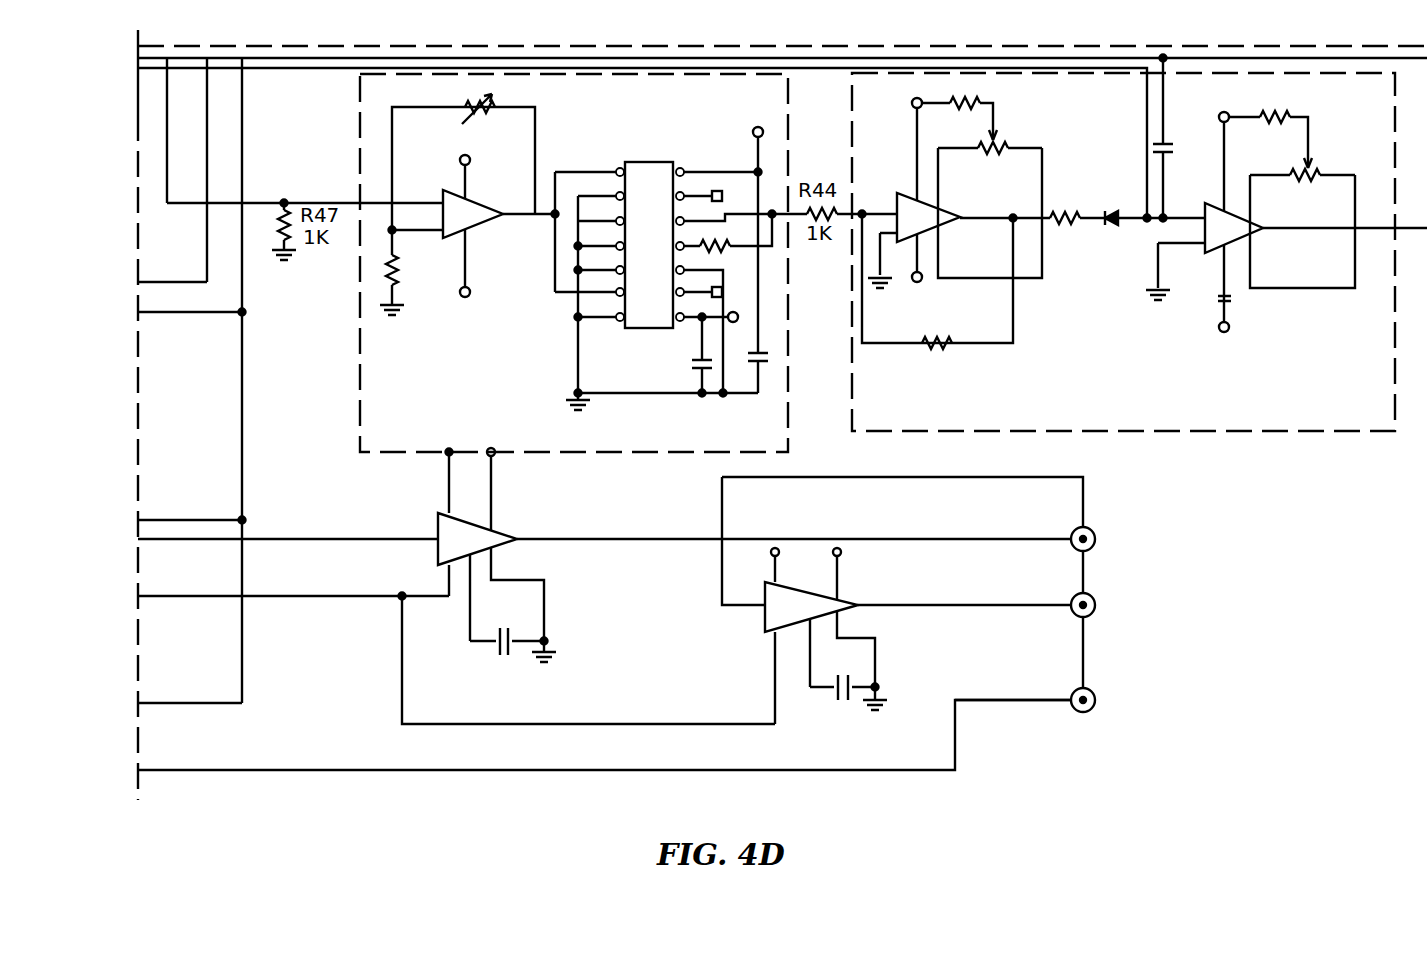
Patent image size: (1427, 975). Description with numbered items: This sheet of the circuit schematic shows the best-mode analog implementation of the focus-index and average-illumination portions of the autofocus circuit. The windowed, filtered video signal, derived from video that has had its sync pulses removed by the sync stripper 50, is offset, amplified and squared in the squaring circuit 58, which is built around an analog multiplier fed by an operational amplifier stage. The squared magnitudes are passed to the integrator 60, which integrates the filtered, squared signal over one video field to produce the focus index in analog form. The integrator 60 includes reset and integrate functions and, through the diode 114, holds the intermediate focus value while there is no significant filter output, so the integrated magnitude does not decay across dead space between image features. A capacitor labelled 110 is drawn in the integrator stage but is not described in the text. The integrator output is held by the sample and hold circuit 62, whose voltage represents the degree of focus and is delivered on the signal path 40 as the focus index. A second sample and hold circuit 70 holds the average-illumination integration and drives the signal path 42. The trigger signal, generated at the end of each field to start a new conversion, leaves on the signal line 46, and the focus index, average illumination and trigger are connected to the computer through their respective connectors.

The squaring circuit 58 is at (583, 263).
The integrator 60 is at (1139, 244).
The sync stripper 50 is at (681, 255).
The sample and hold circuit 70 is at (545, 573).
The sample and hold circuit 62 is at (919, 574).
The signal path 42 is at (890, 539).
The signal path 40 is at (969, 607).
The signal line 46 is at (986, 705).
The capacitor C5 110 is at (1168, 142).
The diode 114 is at (1118, 221).